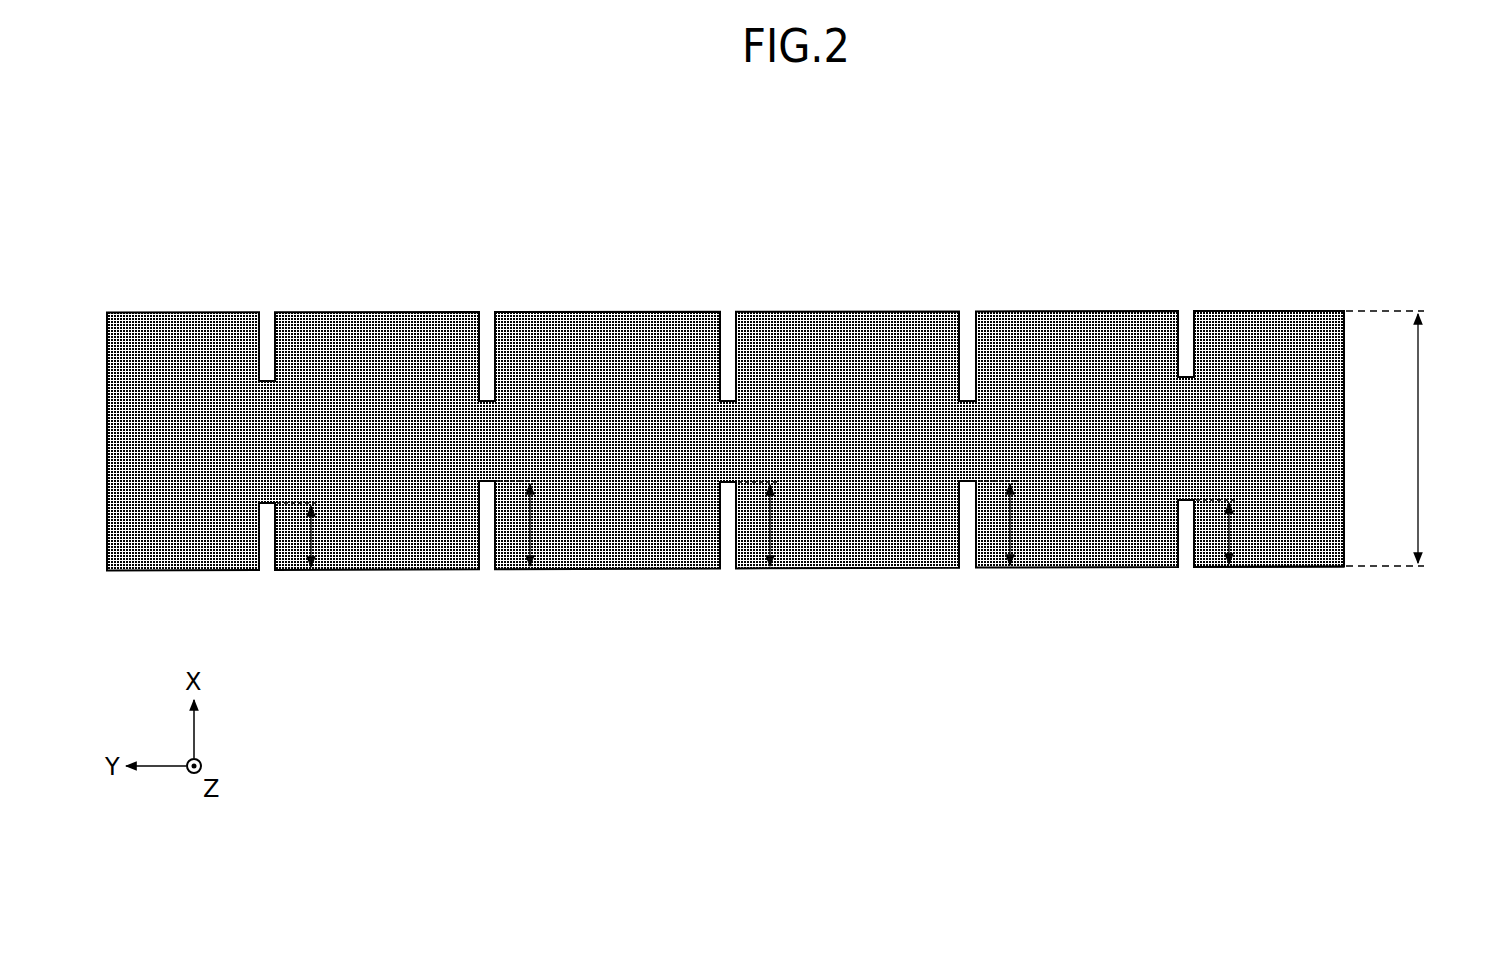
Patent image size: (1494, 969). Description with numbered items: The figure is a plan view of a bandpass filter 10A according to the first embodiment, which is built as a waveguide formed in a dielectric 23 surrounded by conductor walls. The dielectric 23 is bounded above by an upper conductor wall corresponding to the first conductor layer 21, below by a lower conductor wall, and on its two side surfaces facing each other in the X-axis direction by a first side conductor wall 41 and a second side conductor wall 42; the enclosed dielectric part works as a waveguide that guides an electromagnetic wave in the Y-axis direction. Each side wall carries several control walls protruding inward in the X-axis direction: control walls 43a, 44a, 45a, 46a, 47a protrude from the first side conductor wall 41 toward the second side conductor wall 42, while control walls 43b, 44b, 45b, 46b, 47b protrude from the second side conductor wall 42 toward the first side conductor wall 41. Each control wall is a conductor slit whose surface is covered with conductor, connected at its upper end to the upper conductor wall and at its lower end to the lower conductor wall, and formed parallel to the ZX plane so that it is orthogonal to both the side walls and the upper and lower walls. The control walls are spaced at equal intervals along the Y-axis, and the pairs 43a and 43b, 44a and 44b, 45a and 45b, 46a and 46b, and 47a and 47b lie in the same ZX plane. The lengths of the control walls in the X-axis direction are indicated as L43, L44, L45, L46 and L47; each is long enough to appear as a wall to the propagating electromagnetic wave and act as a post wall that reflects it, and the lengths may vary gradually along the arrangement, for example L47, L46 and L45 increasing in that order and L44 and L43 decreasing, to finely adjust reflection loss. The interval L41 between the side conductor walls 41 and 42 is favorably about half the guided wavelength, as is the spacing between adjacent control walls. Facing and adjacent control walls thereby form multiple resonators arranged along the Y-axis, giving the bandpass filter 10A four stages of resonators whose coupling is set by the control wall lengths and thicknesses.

The bandpass filter 10A is at (168, 203).
The first conductor layer 21 is at (1333, 425).
The dielectric 23 is at (1333, 386).
The first side conductor wall 41 is at (1265, 568).
The second side conductor wall 42 is at (1262, 311).
The control wall 43a is at (1172, 548).
The control wall 43b is at (1172, 333).
The control wall 44a is at (953, 548).
The control wall 44b is at (953, 333).
The control wall 45a is at (714, 548).
The control wall 45b is at (714, 333).
The control wall 46a is at (473, 548).
The control wall 46b is at (473, 333).
The control wall 47a is at (253, 548).
The control wall 47b is at (253, 333).
The interval between the pair of side conductor walls L41 is at (1408, 438).
The length of control wall 43a L43 is at (1237, 532).
The length of control wall 44a L44 is at (1018, 523).
The length of control wall 45a L45 is at (779, 524).
The length of control wall 46a L46 is at (538, 523).
The length of control wall 47a L47 is at (318, 535).